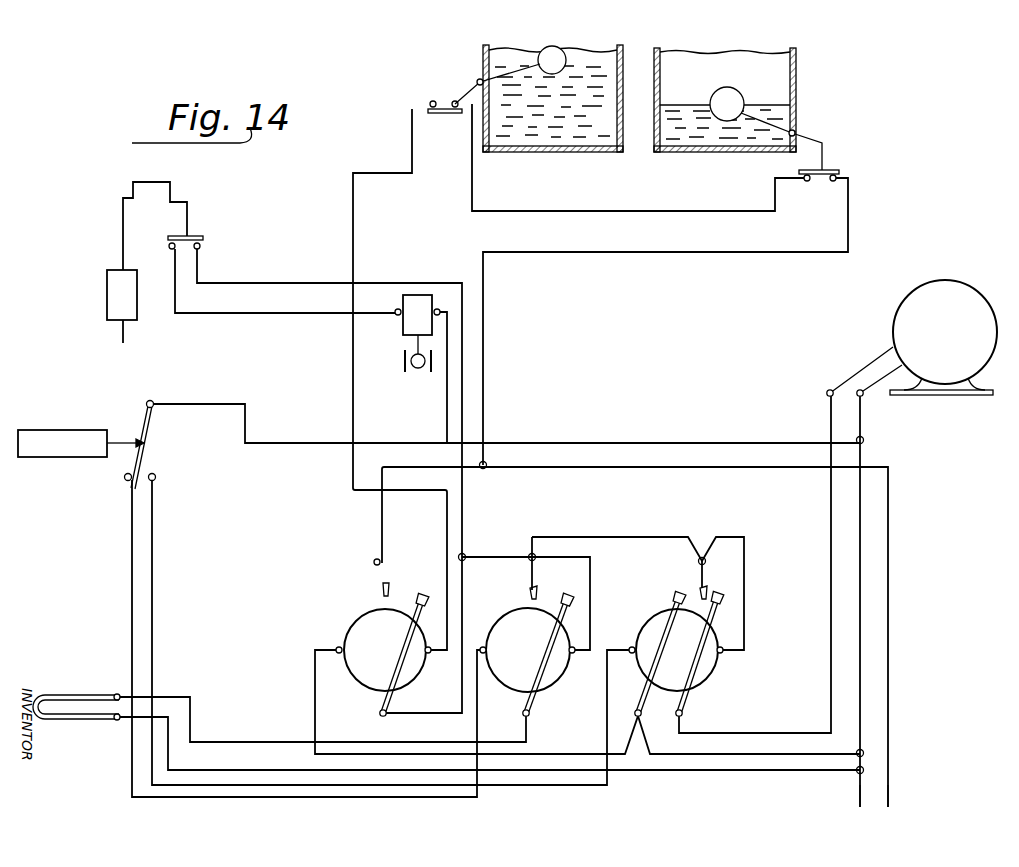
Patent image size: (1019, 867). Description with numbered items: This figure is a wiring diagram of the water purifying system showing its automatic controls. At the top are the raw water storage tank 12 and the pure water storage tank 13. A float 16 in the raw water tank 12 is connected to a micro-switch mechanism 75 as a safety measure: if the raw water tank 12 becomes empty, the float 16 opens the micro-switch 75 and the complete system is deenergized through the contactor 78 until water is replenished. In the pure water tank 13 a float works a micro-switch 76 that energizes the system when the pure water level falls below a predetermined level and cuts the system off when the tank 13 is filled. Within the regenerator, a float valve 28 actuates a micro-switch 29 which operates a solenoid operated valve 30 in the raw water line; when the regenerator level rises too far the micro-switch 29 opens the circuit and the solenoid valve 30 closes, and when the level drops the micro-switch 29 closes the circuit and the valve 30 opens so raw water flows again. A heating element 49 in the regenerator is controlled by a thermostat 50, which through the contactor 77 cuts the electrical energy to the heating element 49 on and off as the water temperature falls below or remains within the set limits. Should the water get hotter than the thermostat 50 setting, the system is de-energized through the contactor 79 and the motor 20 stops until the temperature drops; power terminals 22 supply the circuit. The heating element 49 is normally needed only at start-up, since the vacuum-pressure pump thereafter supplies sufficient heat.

The raw water storage tank 12 is at (687, 154).
The pure water storage tank 13 is at (540, 154).
The float 16 is at (748, 117).
The motor 20 is at (948, 296).
The vacuum-pressure pump 22 is at (857, 796).
The float valve 28 is at (116, 305).
The micro-switch 29 is at (206, 237).
The solenoid operated valve 30 is at (405, 325).
The heating element 49 is at (480, 79).
The thermostat 50 is at (77, 430).
The micro-switch mechanism 75 is at (838, 172).
The micro-switch 76 is at (433, 101).
The contactor 77 is at (548, 670).
The contactor 78 is at (366, 632).
The contactor 79 is at (699, 676).